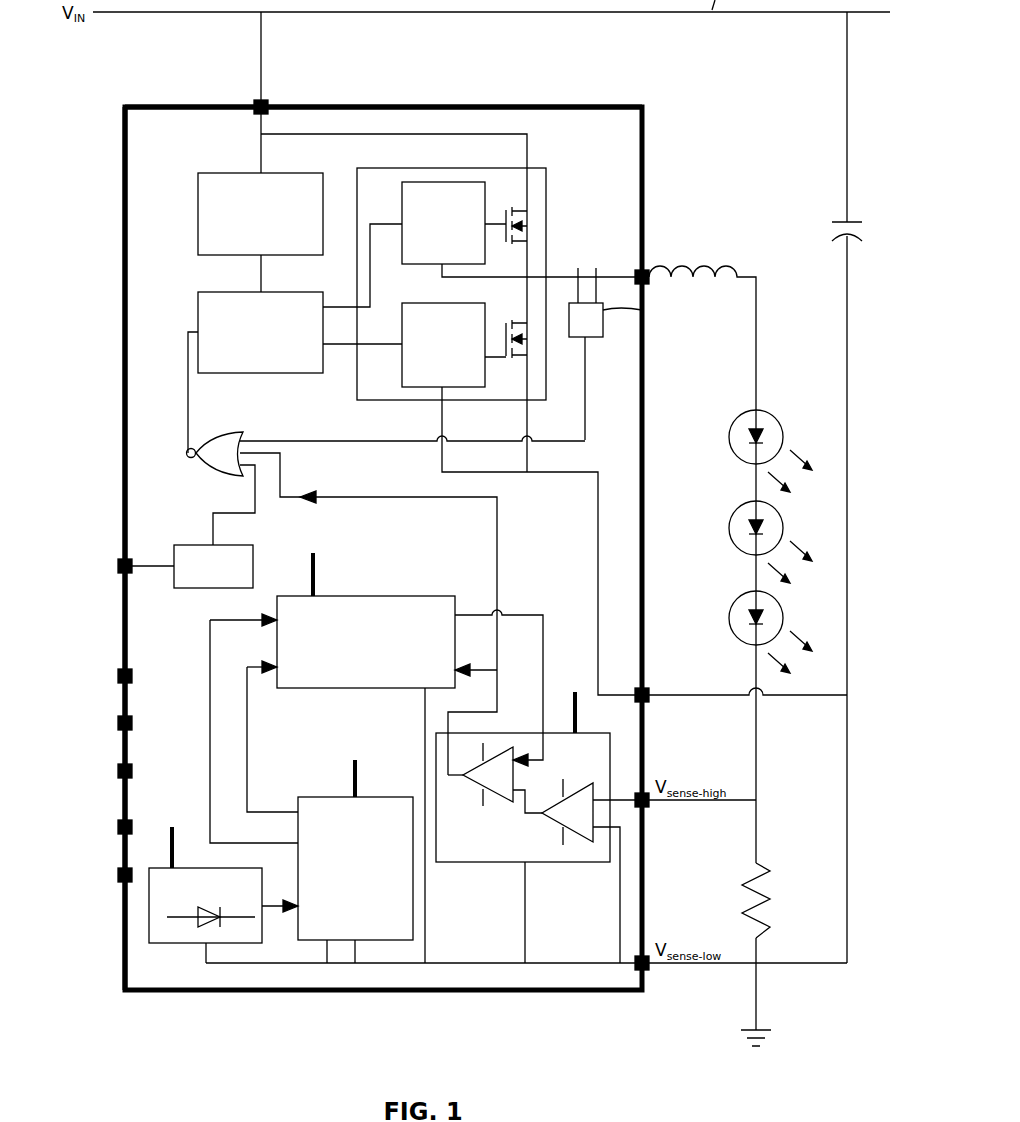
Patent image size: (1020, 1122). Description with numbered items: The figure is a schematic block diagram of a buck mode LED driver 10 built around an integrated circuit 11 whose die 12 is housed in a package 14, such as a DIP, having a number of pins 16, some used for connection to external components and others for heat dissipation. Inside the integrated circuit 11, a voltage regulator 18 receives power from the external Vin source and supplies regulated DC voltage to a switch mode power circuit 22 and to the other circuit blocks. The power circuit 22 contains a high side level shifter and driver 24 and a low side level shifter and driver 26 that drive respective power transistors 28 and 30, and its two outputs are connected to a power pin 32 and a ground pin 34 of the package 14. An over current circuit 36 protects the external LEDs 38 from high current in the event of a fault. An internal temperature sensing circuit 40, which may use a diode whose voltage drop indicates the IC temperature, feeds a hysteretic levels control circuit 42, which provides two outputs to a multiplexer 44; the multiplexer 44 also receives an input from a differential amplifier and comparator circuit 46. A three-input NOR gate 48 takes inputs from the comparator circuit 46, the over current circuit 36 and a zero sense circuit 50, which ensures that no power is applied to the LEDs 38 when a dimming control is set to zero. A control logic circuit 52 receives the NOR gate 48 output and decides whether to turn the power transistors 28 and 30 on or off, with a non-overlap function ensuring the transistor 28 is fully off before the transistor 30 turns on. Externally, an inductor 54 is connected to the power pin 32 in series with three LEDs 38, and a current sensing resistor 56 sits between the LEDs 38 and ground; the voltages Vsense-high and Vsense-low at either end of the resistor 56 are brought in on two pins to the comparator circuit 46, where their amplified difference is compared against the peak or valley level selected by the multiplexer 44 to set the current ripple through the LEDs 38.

The buck mode LED driver 10 is at (660, 174).
The integrated circuit 11 is at (580, 132).
The die 12 is at (190, 158).
The package 14 is at (124, 437).
The pins 16 is at (122, 771).
The voltage regulator 18 is at (198, 181).
The switch mode power circuit 22 is at (548, 222).
The high side level shifter and driver 24 is at (402, 191).
The low side level shifter and driver 26 is at (418, 388).
The power transistor 28 is at (520, 208).
The power transistor 30 is at (520, 352).
The power pin 32 is at (647, 266).
The ground pin 34 is at (646, 688).
The over current circuit 36 is at (645, 312).
The LEDs 38 is at (729, 442).
The internal temperature sensing circuit 40 is at (233, 945).
The hysteretic levels control circuit 42 is at (327, 945).
The multiplexer 44 is at (378, 595).
The differential amplifier and comparator circuit 46 is at (565, 863).
The 3-input NOR gate 48 is at (232, 431).
The zero sense circuit 50 is at (190, 545).
The control logic circuit 52 is at (198, 297).
The inductor 54 is at (737, 268).
The current sensing resistor 56 is at (770, 918).